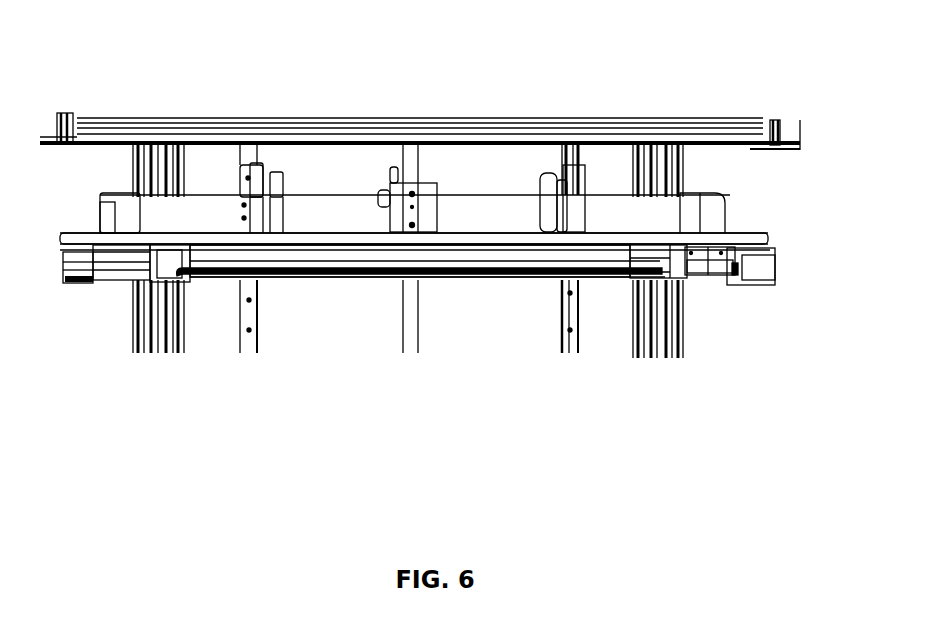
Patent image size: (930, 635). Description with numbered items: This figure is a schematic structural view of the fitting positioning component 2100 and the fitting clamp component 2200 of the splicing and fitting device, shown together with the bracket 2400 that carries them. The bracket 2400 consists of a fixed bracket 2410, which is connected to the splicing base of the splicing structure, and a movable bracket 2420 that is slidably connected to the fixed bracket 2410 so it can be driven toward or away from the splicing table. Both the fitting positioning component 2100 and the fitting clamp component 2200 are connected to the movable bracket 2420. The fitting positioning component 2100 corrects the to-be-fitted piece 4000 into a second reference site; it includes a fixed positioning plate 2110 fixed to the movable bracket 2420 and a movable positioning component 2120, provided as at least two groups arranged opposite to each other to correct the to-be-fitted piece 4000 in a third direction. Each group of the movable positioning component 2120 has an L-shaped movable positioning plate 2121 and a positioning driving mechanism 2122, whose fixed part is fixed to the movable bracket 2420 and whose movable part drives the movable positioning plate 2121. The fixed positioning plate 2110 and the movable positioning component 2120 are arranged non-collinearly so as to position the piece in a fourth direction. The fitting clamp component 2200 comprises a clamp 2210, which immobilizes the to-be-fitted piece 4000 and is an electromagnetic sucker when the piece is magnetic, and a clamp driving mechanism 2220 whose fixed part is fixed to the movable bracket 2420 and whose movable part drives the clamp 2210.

The bracket 2400 is at (600, 82).
The fixed bracket 2410 is at (633, 183).
The movable bracket 2420 is at (718, 213).
The fitting clamp component 2200 is at (437, 440).
The clamp 2210 is at (298, 263).
The clamp driving mechanism 2220 is at (283, 217).
The to-be-fitted piece 4000 is at (213, 278).
The fitting positioning component 2100 is at (568, 455).
The fixed positioning plate 2110 is at (414, 353).
The movable positioning component 2120 is at (630, 395).
The movable positioning plate 2121 is at (673, 265).
The positioning driving mechanism 2122 is at (758, 272).